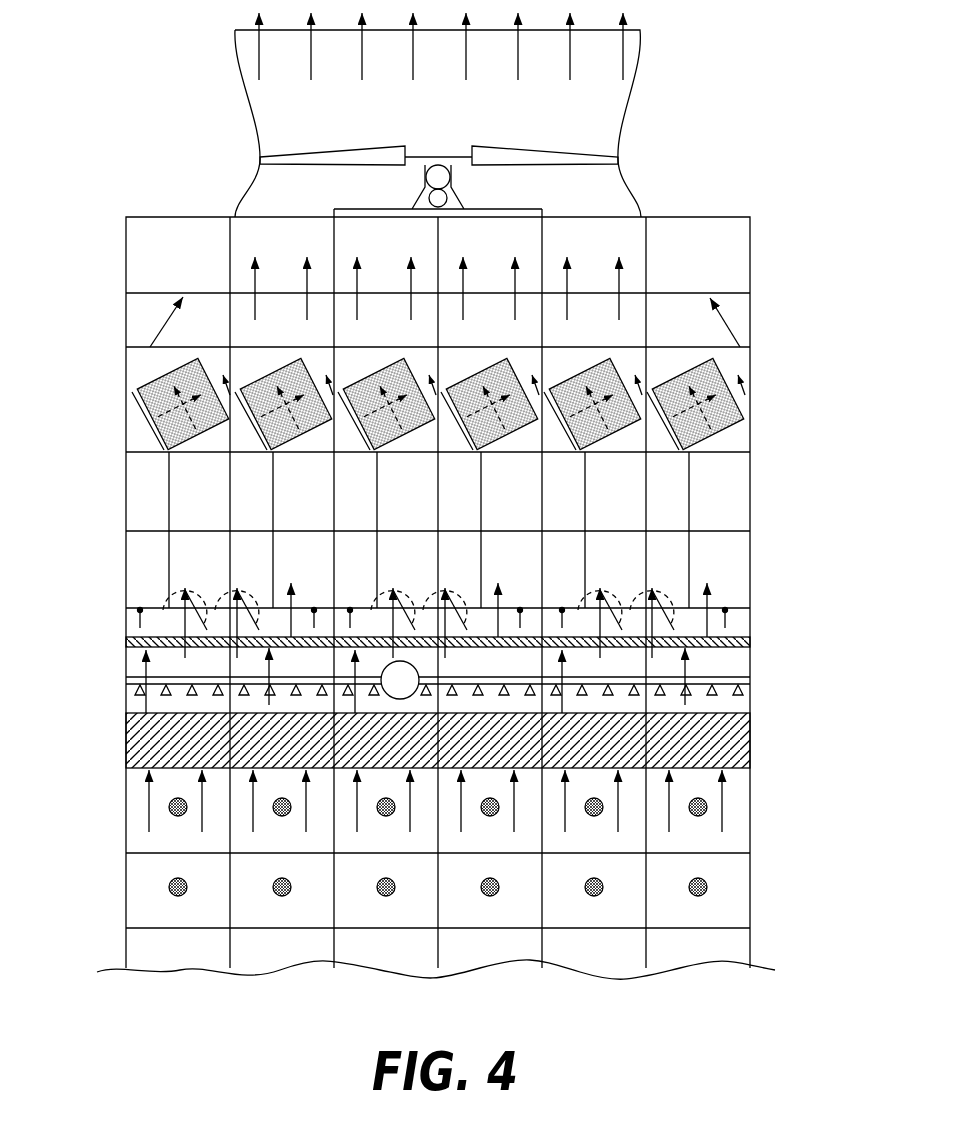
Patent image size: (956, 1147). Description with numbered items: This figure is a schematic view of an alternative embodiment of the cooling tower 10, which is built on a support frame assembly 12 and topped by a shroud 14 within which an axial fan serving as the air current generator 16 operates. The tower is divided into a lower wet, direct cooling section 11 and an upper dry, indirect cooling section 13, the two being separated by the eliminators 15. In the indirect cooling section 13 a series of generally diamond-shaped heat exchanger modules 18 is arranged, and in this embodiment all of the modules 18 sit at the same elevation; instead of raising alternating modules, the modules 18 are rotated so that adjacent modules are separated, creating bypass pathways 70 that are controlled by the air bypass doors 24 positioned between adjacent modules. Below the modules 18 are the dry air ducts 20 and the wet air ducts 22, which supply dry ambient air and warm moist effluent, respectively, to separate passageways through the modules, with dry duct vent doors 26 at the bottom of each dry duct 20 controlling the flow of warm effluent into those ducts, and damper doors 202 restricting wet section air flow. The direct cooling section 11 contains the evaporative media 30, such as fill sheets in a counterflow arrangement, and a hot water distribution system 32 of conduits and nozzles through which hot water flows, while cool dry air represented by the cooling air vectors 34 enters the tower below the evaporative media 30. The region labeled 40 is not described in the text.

The cooling tower 10 is at (766, 84).
The wet direct cooling section 11 is at (85, 857).
The support frame assembly 12 is at (150, 216).
The dry indirect cooling section 13 is at (85, 467).
The shroud 14 is at (641, 70).
The eliminators 15 is at (750, 641).
The air current generator 16 is at (500, 147).
The heat exchanger modules 18 is at (137, 388).
The dry air ducts 20 is at (189, 503).
The wet air ducts 22 is at (137, 503).
The air bypass doors 24 is at (238, 390).
The dry duct vent doors 26 is at (195, 592).
The evaporative media 30 is at (750, 745).
The hot water distribution system 32 is at (750, 684).
The cooling air vectors 34 is at (707, 807).
The upper furnace zone 40 is at (722, 237).
The bypass pathways 70 is at (230, 415).
The damper doors 202 is at (140, 610).